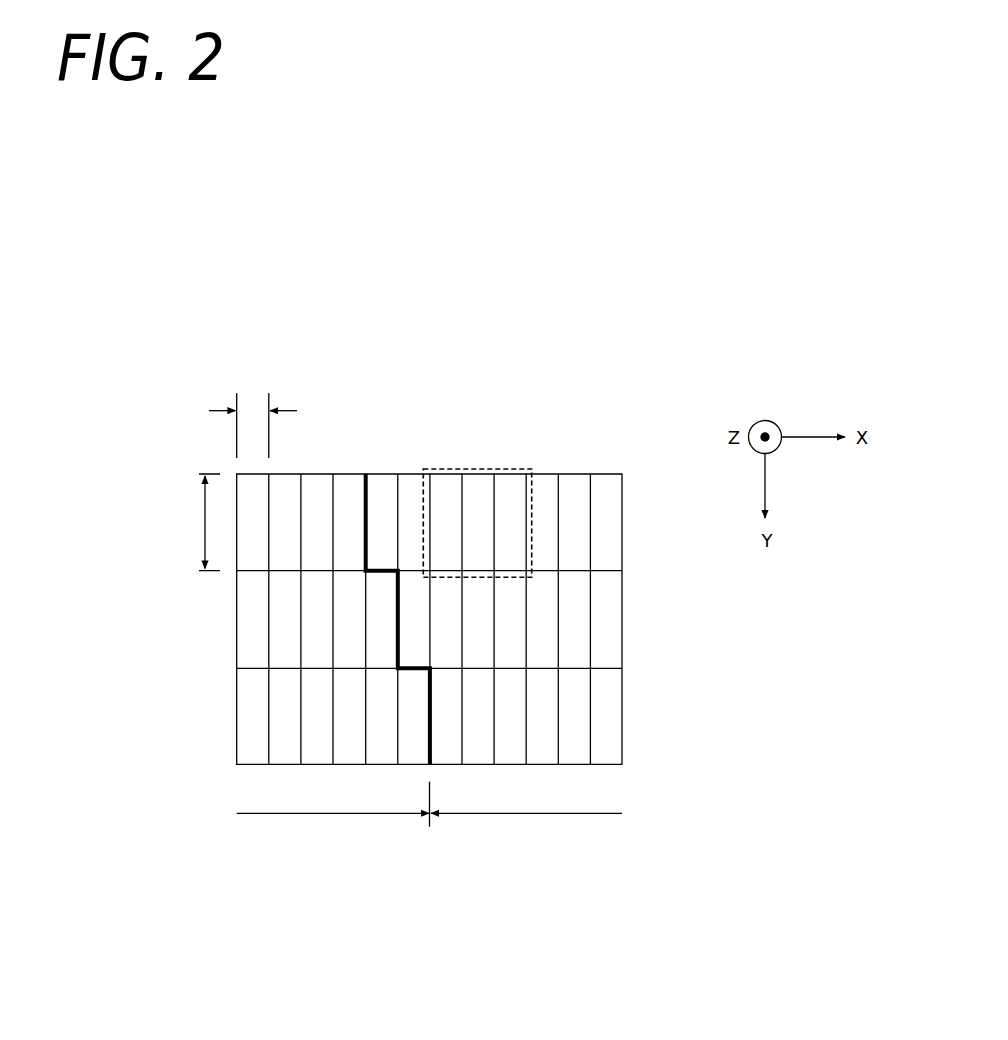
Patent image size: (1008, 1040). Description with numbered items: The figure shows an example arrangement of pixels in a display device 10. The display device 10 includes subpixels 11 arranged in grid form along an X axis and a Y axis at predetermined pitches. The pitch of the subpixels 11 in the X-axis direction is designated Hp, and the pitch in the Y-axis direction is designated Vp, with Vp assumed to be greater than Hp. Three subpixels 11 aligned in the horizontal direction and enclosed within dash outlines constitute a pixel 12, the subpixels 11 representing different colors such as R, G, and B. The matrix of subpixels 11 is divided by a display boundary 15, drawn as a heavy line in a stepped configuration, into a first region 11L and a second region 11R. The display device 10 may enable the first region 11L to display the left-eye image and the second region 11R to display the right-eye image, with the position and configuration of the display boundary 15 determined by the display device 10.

The display device 10 is at (460, 527).
The subpixel 11 is at (614, 490).
The pixel 12 is at (477, 469).
The display boundary 15 is at (367, 487).
The first region 11L is at (325, 815).
The second region 11R is at (533, 815).
The pitch in the X-axis direction Hp is at (252, 408).
The pitch in the Y-axis direction Vp is at (203, 522).